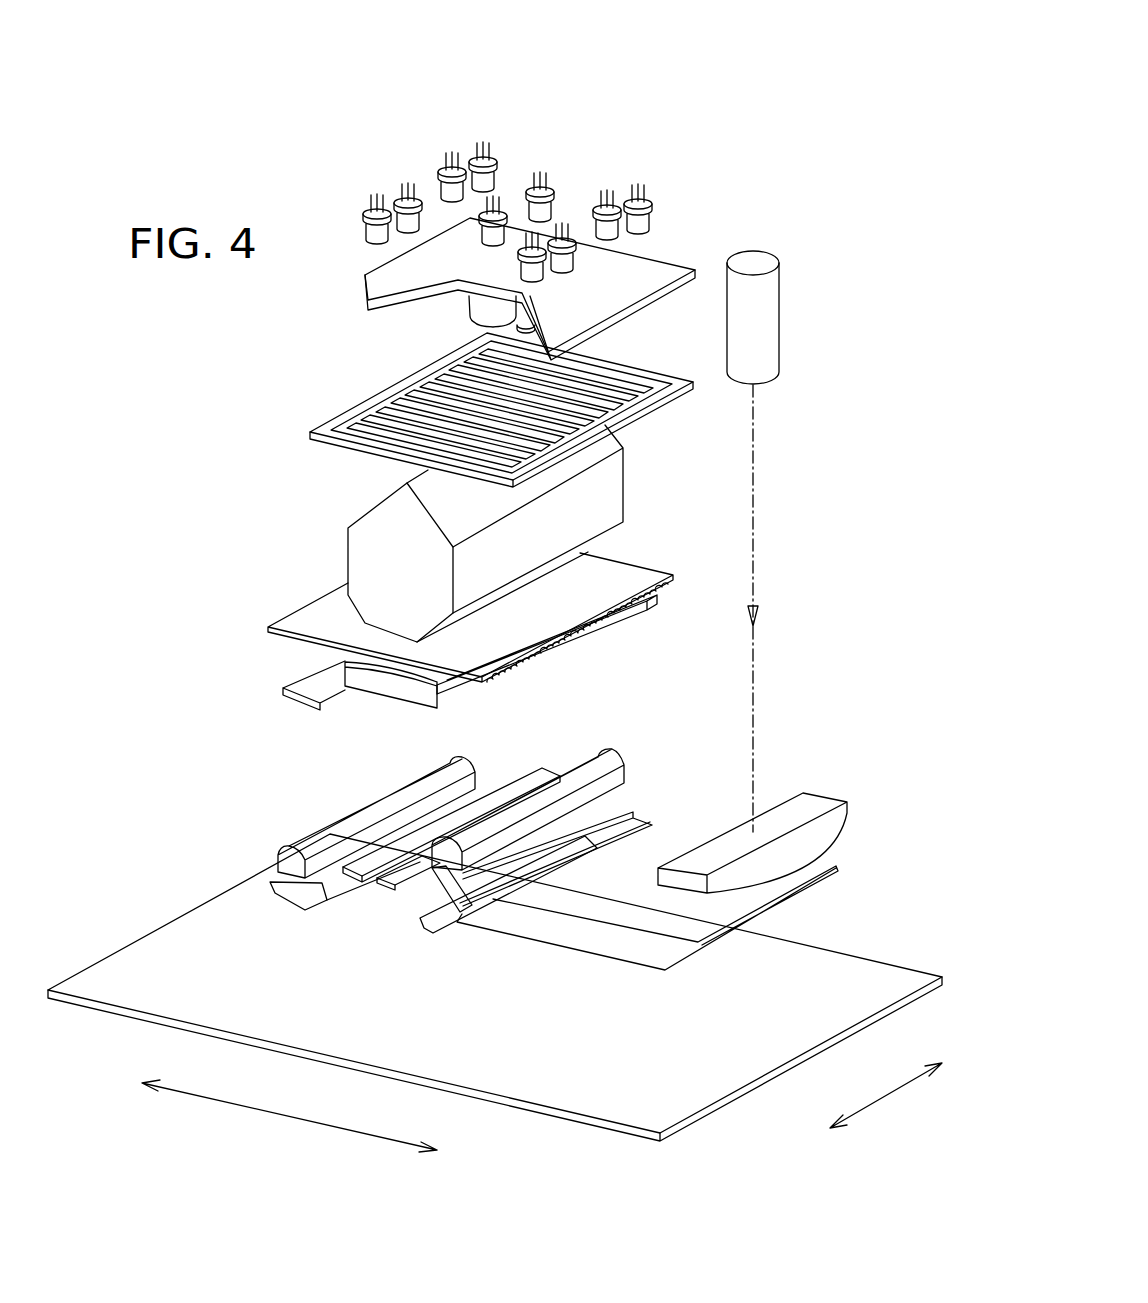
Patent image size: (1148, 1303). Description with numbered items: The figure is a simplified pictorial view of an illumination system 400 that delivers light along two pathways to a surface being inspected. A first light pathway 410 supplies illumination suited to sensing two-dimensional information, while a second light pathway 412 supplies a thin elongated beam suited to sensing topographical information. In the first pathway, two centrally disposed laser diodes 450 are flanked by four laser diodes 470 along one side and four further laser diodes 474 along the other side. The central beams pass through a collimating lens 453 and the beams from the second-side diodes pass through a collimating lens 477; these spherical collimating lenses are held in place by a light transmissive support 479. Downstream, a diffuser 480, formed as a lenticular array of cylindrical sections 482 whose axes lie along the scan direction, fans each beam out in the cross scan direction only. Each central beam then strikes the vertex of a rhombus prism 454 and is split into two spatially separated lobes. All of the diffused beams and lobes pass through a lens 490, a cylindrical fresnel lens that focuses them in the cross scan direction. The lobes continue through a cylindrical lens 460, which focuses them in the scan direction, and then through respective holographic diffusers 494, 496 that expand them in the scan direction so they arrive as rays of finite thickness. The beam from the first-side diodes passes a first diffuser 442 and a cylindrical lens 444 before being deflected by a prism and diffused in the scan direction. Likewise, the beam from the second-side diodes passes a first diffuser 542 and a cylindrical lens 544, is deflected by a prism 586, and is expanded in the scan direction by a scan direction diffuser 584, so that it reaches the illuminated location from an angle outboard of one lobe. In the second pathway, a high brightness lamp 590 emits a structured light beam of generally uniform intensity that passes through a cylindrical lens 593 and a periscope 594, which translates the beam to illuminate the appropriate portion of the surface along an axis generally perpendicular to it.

The illumination system 400 is at (209, 148).
The first light pathway 410 is at (603, 126).
The second light pathway 412 is at (854, 276).
The laser diodes 470 is at (377, 196).
The laser diodes 450 is at (547, 203).
The laser diodes 474 is at (644, 220).
The light transmissive support 479 is at (638, 300).
The collimating lens 453 is at (468, 303).
The collimating lens 477 is at (527, 322).
The diffuser 480 is at (298, 417).
The cylindrical sections 482 is at (372, 424).
The rhombus prism 454 is at (357, 547).
The lens 490 is at (631, 572).
The first diffuser 542 is at (478, 705).
The cylindrical lens 460 is at (390, 693).
The first diffuser 442 is at (296, 677).
The cylindrical lens 444 is at (290, 845).
The diffuser 494 is at (517, 776).
The diffuser 496 is at (388, 887).
The cylindrical lens 544 is at (600, 757).
The prism 586 is at (629, 805).
The scan direction diffuser 584 is at (425, 930).
The periscope 594 is at (578, 940).
The cylindrical lens 593 is at (818, 805).
The high brightness lamp 590 is at (758, 256).